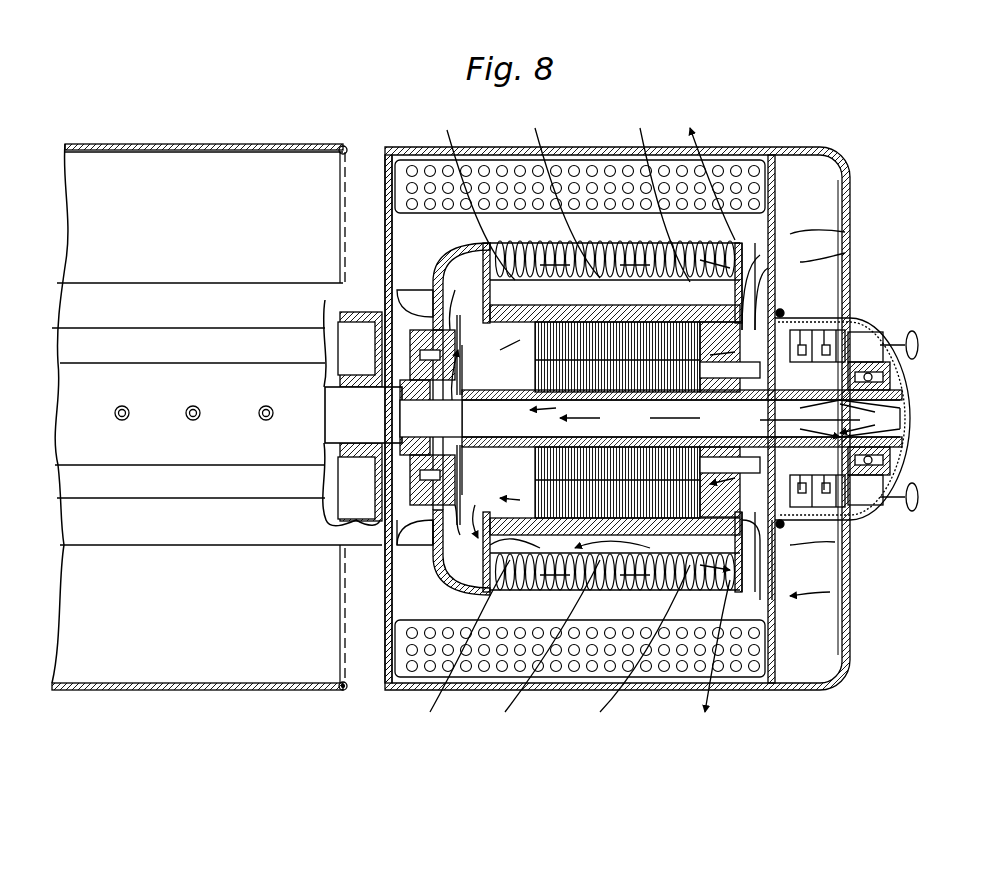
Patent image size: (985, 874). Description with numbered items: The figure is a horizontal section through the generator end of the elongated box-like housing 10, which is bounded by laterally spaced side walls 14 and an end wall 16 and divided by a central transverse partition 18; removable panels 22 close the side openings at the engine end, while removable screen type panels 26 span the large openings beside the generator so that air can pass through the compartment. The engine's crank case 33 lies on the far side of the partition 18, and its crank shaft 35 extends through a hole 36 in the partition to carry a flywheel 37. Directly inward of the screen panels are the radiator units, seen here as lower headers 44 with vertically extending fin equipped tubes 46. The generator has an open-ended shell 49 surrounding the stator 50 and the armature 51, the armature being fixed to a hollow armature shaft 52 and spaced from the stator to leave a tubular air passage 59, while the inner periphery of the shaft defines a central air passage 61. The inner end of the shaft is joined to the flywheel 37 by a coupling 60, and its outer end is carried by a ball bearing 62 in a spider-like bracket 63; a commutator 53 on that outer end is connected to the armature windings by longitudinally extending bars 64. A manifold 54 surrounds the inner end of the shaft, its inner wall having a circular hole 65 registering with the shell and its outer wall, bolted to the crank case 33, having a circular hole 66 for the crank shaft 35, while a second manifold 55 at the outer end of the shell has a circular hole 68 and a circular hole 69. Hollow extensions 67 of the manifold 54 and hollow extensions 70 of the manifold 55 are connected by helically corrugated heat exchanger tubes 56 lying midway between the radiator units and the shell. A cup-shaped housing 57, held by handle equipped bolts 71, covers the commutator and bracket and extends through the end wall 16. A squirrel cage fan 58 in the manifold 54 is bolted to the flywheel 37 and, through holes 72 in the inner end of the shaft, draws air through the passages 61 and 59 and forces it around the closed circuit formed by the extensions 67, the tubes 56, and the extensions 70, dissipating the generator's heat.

The housing 10 is at (380, 146).
The side walls 14 is at (360, 698).
The end wall 16 is at (778, 635).
The partition 18 is at (395, 624).
The removable panels 22 is at (236, 700).
The removable screen type panels 26 is at (568, 160).
The crank case 33 is at (240, 498).
The crank shaft 35 is at (363, 415).
The hole 36 is at (360, 486).
The flywheel 37 is at (378, 538).
The lower headers 44 is at (430, 213).
The fin equipped tubes 46 is at (608, 168).
The shell 49 is at (580, 315).
The stator 50 is at (645, 322).
The armature 51 is at (615, 315).
The hollow armature shaft 52 is at (600, 437).
The commutator 53 is at (815, 330).
The manifold 54 is at (433, 292).
The manifold 55 is at (770, 308).
The heat exchanger tubes 56 is at (628, 245).
The cup-shaped housing 57 is at (880, 518).
The fan 58 is at (439, 435).
The tubular air passage 59 is at (580, 555).
The coupling 60 is at (435, 522).
The air passage 61 is at (531, 418).
The ball bearing 62 is at (895, 388).
The spider-like bracket 63 is at (870, 350).
The bars 64 is at (730, 418).
The circular hole 65 is at (456, 407).
The circular hole 66 is at (383, 318).
The hollow extensions 67 is at (462, 262).
The circular hole 68 is at (770, 288).
The circular hole 69 is at (786, 312).
The hollow extensions 70 is at (775, 258).
The handle equipped bolts 71 is at (917, 340).
The holes 72 is at (521, 408).